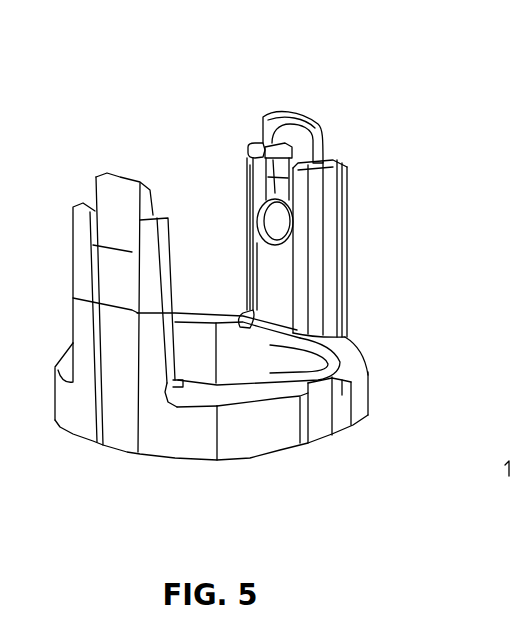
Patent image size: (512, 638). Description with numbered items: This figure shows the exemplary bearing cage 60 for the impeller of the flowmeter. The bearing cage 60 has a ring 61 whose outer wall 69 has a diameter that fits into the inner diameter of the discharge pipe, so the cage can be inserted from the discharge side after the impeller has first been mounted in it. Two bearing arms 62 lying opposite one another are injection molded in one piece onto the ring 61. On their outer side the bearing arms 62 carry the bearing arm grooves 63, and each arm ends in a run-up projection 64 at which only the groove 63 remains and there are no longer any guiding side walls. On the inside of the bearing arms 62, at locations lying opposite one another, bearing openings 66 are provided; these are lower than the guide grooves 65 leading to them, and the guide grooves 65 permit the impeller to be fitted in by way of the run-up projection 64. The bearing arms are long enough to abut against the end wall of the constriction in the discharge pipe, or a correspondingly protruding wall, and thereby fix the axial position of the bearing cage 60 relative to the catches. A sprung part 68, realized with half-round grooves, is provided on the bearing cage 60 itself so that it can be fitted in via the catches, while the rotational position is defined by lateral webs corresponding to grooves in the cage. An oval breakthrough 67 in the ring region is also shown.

The bearing cage 60 is at (395, 290).
The ring 61 is at (270, 440).
The bearing arm 62 is at (328, 247).
The bearing arm groove 63 is at (122, 436).
The run-up projection 64 is at (300, 116).
The guiding groove 65 is at (247, 145).
The bearing opening 66 is at (270, 225).
The oval breakthrough 67 is at (272, 364).
The sprung part 68 is at (323, 406).
The outer wall 69 is at (172, 442).